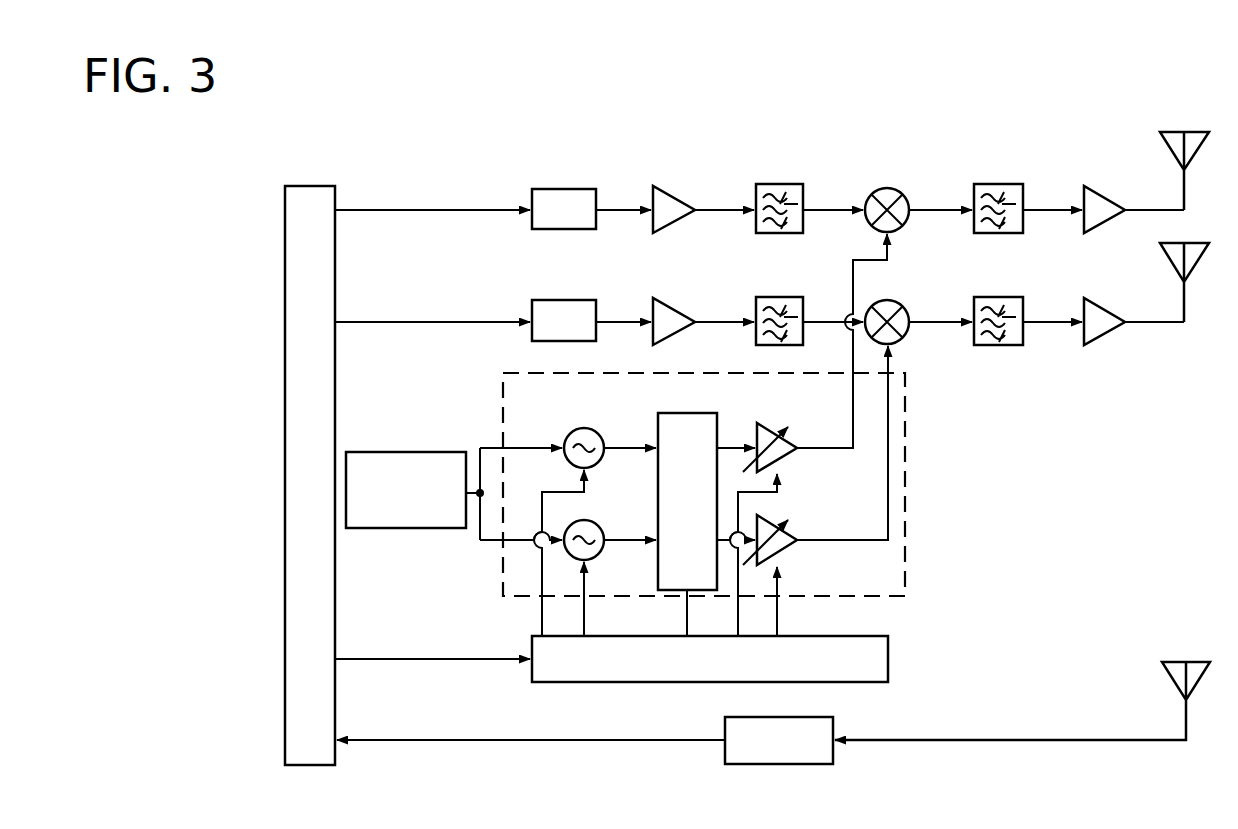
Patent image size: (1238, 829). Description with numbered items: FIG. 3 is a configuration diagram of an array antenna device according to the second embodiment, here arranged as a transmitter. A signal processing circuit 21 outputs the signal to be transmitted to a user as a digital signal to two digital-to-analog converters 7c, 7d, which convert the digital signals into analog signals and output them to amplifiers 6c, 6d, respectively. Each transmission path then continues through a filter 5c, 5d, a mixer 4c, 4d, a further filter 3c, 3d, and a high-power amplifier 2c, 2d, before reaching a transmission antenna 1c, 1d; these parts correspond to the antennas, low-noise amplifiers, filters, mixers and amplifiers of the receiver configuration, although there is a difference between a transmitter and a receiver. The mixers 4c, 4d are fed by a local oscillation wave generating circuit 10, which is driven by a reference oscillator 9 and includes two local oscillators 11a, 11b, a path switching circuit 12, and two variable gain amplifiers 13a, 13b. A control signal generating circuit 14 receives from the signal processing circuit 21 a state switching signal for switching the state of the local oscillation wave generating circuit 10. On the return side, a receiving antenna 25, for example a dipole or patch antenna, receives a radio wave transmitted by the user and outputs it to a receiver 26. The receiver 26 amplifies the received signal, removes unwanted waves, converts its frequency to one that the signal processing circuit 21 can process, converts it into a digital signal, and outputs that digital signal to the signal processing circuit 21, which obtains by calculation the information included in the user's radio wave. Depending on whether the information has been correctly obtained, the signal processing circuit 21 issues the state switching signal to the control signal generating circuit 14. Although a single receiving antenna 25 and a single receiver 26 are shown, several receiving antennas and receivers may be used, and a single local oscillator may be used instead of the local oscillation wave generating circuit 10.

The signal processing circuit 21 is at (312, 181).
The digital-to-analog converter 7c is at (565, 181).
The digital-to-analog converter 7d is at (565, 293).
The amplifier 6c is at (680, 181).
The amplifier 6d is at (680, 293).
The filter 5c is at (782, 178).
The filter 5d is at (782, 291).
The mixer 4c is at (893, 178).
The mixer 4d is at (893, 290).
The filter 3c is at (998, 178).
The filter 3d is at (998, 291).
The high-power amplifier 2c is at (1107, 186).
The high-power amplifier 2d is at (1107, 298).
The transmission antenna 1c is at (1190, 124).
The transmission antenna 1d is at (1190, 235).
The reference oscillator 9 is at (405, 447).
The local oscillation wave generating circuit 10 is at (910, 444).
The local oscillator 11a is at (602, 436).
The local oscillator 11b is at (602, 528).
The path switching circuit 12 is at (688, 410).
The variable gain amplifier 13a is at (800, 432).
The variable gain amplifier 13b is at (800, 524).
The control signal generating circuit 14 is at (892, 657).
The receiver 26 is at (815, 712).
The receiving antenna 25 is at (1190, 655).